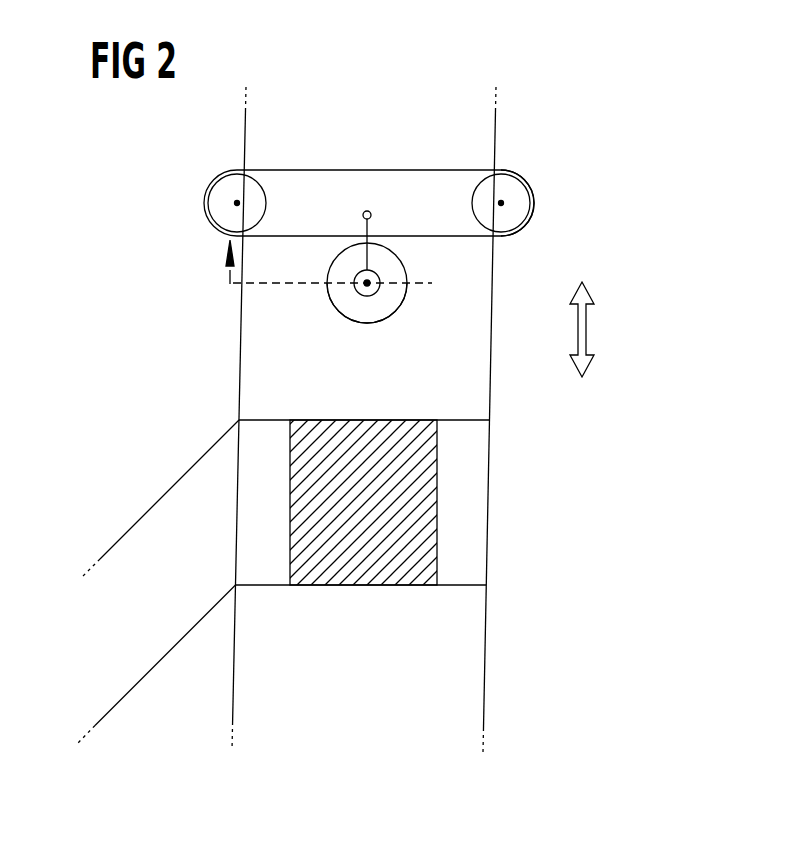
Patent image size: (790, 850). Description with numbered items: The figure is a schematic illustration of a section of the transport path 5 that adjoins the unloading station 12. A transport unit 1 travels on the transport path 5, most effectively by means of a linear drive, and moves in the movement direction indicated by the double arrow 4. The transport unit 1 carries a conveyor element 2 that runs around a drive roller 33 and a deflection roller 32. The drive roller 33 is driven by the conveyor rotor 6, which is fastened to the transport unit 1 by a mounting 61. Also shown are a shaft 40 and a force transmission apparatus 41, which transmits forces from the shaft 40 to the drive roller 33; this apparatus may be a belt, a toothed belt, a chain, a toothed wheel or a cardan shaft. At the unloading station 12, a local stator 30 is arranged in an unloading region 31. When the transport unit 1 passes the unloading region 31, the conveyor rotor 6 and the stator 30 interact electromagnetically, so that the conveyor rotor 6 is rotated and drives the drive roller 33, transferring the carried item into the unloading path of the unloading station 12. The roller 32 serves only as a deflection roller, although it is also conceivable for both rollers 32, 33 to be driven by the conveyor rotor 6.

The transport unit 1 is at (506, 172).
The conveyor element 2 is at (372, 168).
The double arrow 4 is at (592, 327).
The transport path 5 is at (478, 332).
The conveyor rotor 6 is at (368, 316).
The unloading station 12 is at (120, 676).
The local stator 30 is at (437, 462).
The unloading region 31 is at (473, 542).
The deflection roller 32 is at (521, 205).
The drive roller 33 is at (218, 200).
The shaft 40 is at (345, 283).
The force transmission apparatus 41 is at (216, 296).
The mounting 61 is at (372, 236).